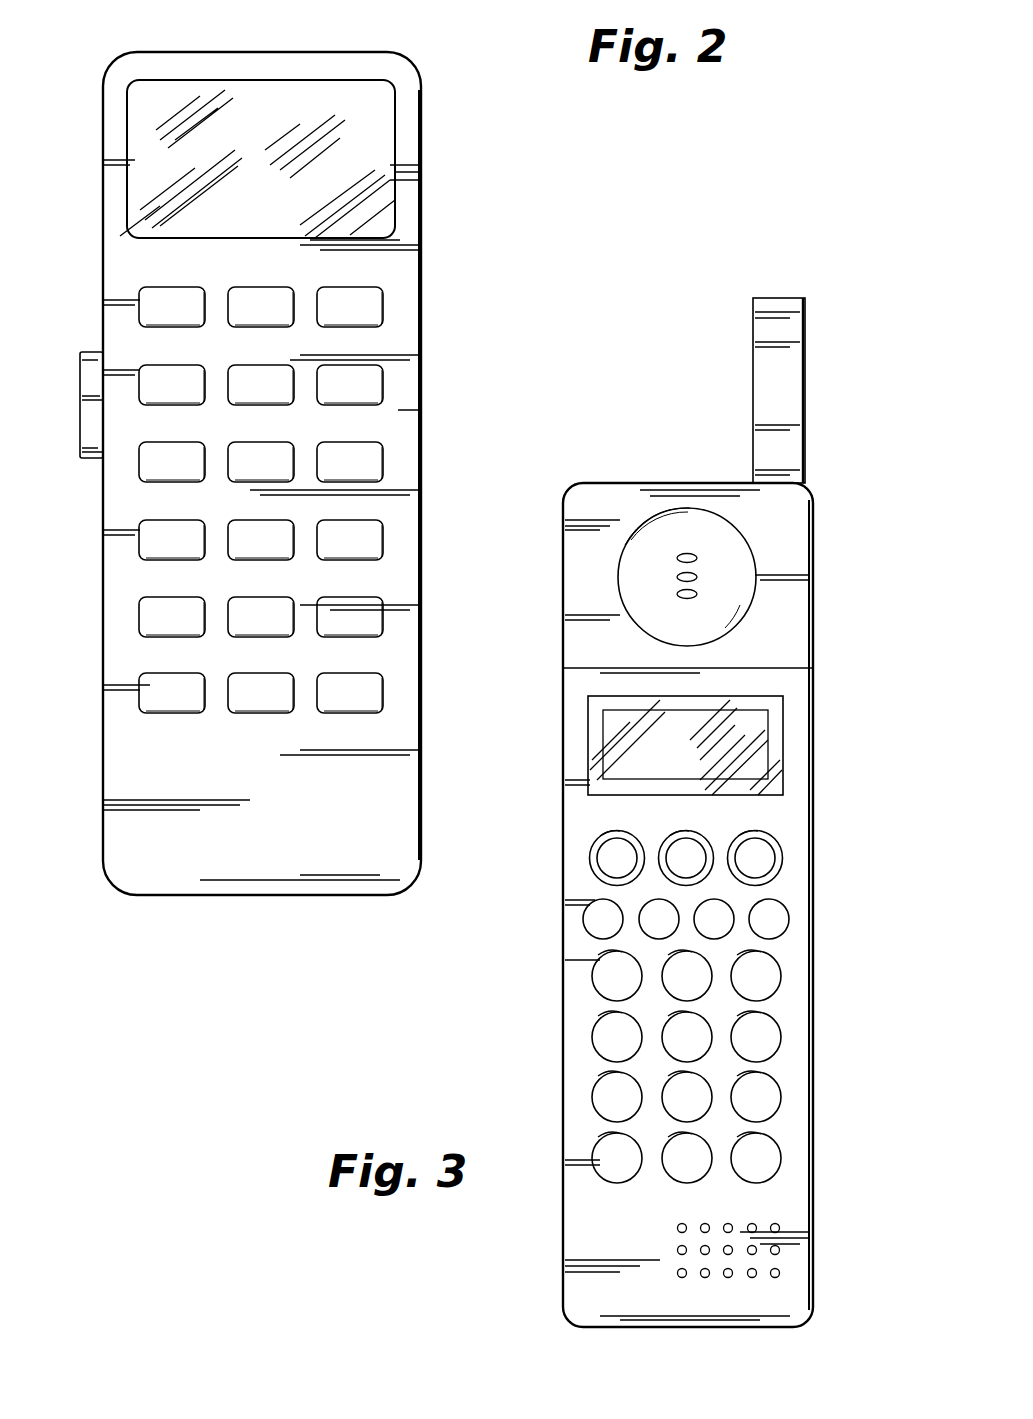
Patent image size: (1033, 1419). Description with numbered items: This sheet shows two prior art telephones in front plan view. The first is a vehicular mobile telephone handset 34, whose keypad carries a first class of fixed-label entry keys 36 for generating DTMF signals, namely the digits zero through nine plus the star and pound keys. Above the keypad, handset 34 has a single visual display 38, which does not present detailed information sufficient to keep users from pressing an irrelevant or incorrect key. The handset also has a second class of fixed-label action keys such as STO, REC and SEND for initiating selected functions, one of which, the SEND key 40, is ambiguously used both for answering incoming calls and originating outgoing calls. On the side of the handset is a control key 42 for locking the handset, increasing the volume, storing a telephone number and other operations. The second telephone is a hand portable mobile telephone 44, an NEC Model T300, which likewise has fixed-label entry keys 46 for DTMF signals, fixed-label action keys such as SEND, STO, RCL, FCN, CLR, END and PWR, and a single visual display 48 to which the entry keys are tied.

In FIG. 2, the vehicular mobile telephone handset 34 is at (432, 200).
In FIG. 2, the fixed-label entry keys 36 is at (385, 448).
In FIG. 2, the visual display 38 is at (133, 158).
In FIG. 2, the SEND key 40 is at (385, 691).
In FIG. 2, the control key 42 is at (84, 460).
In FIG. 3, the hand portable mobile telephone 44 is at (818, 492).
In FIG. 3, the fixed-label entry keys 46 is at (783, 1092).
In FIG. 3, the visual display 48 is at (760, 718).